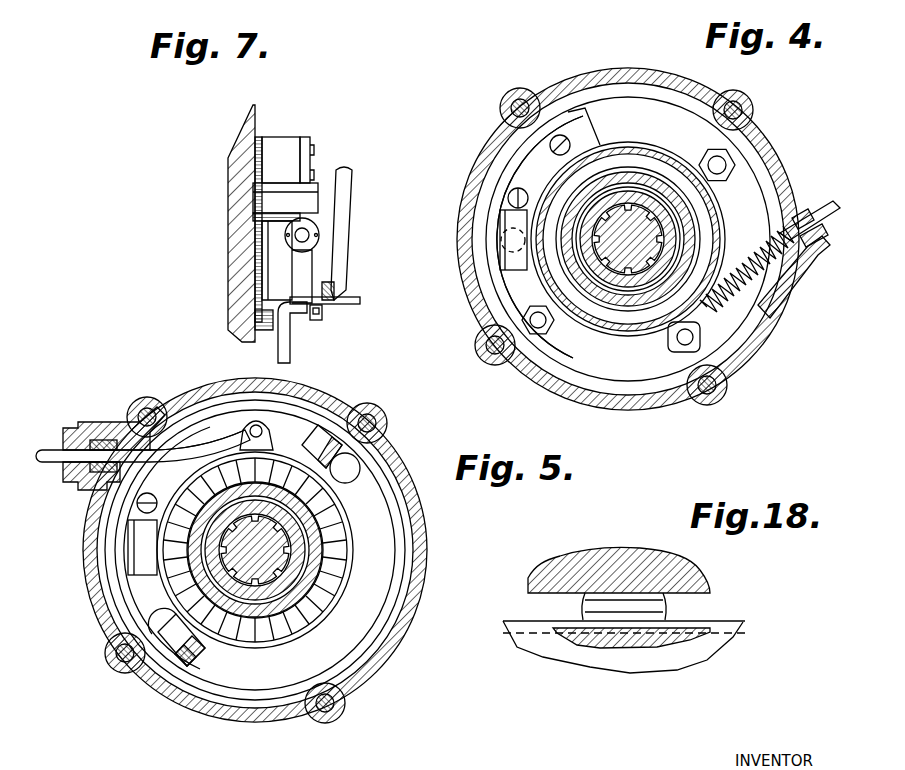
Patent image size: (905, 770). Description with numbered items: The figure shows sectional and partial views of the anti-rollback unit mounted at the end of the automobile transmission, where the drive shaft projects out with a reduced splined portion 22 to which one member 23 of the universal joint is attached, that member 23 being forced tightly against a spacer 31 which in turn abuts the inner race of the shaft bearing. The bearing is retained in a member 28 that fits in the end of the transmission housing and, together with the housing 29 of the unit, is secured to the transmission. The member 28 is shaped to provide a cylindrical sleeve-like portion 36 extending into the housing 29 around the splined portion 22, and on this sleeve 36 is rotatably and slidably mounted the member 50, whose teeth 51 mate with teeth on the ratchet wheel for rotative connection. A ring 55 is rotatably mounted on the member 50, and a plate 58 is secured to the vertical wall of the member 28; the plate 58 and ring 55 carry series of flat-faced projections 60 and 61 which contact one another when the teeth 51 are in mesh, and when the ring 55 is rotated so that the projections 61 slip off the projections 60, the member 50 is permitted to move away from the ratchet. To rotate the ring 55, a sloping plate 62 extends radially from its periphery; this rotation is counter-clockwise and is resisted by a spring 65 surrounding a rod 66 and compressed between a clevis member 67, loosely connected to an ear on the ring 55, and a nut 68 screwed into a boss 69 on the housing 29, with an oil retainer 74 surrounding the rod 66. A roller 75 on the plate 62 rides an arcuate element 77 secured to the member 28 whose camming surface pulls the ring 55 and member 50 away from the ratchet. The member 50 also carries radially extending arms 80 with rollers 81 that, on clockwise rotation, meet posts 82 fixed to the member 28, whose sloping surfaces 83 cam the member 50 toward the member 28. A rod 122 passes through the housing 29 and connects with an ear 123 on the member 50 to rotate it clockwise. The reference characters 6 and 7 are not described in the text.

In FIG. 4, the brake assembly 6 is at (603, 120).
In FIG. 5, the brake assembly 7 is at (283, 431).
In FIG. 4, the reduced splined portion 22 is at (598, 320).
In FIG. 5, the reduced splined portion 22 is at (312, 612).
In FIG. 5, the member of the universal joint 23 is at (300, 582).
In FIG. 7, the member 28 is at (237, 298).
In FIG. 4, the member 28 is at (583, 5).
In FIG. 18, the member 28 is at (715, 657).
In FIG. 4, the housing 29 is at (778, 172).
In FIG. 5, the housing 29 is at (424, 606).
In FIG. 4, the spacer 31 is at (692, 255).
In FIG. 7, the cylindrical sleeve-like portion 36 is at (356, 303).
In FIG. 4, the cylindrical sleeve-like portion 36 is at (645, 180).
In FIG. 5, the cylindrical sleeve-like portion 36 is at (328, 522).
In FIG. 7, the member 50 is at (305, 140).
In FIG. 4, the member 50 is at (612, 166).
In FIG. 5, the member 50 is at (322, 573).
In FIG. 5, the teeth 51 is at (338, 545).
In FIG. 7, the ring 55 is at (282, 138).
In FIG. 4, the ring 55 is at (722, 226).
In FIG. 18, the ring 55 is at (588, 553).
In FIG. 18, the plate 58 is at (643, 632).
In FIG. 7, the projections 60 is at (242, 342).
In FIG. 18, the projections 60 is at (583, 603).
In FIG. 7, the projections 61 is at (258, 140).
In FIG. 18, the projections 61 is at (667, 602).
In FIG. 4, the plate 62 is at (517, 270).
In FIG. 5, the plate 62 is at (146, 575).
In FIG. 4, the spring 65 is at (757, 284).
In FIG. 4, the rod 66 is at (838, 210).
In FIG. 4, the clevis member 67 is at (700, 343).
In FIG. 4, the nut 68 is at (805, 212).
In FIG. 4, the boss 69 is at (812, 258).
In FIG. 4, the oil retainer 74 is at (828, 238).
In FIG. 4, the roller 75 is at (497, 243).
In FIG. 4, the arcuate element 77 is at (505, 163).
In FIG. 5, the arcuate element 77 is at (115, 568).
In FIG. 7, the arms 80 is at (300, 244).
In FIG. 5, the arms 80 is at (330, 440).
In FIG. 7, the rollers 81 is at (348, 230).
In FIG. 5, the rollers 81 is at (274, 440).
In FIG. 7, the posts 82 is at (318, 195).
In FIG. 4, the posts 82 is at (722, 178).
In FIG. 5, the posts 82 is at (360, 470).
In FIG. 7, the sloping surfaces 83 is at (287, 217).
In FIG. 7, the rod 122 is at (300, 350).
In FIG. 5, the rod 122 is at (44, 460).
In FIG. 7, the ear 123 is at (322, 326).
In FIG. 5, the ear 123 is at (242, 431).